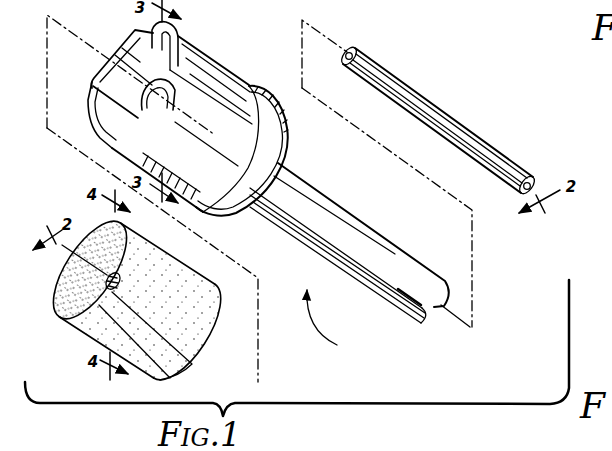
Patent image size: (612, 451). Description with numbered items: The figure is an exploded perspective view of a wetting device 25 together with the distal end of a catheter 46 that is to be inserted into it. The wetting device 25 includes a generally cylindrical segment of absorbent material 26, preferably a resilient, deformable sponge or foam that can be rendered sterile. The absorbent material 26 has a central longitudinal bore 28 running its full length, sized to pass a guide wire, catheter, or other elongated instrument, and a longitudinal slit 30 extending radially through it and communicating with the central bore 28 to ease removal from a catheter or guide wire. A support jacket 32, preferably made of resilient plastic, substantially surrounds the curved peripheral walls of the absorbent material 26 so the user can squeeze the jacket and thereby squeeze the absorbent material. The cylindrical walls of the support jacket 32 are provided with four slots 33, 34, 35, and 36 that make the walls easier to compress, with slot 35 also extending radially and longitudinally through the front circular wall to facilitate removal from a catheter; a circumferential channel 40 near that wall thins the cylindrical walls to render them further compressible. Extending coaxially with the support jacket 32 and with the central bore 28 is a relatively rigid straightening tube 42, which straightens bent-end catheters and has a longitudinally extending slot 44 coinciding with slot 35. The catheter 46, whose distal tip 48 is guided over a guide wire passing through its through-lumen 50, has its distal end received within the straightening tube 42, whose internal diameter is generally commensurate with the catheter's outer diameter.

The wetting device 25 is at (335, 325).
The absorbent material 26 is at (213, 317).
The central longitudinal bore 28 is at (105, 238).
The longitudinal slit 30 is at (83, 331).
The support jacket 32 is at (207, 55).
The slot 33 is at (146, 29).
The slot 34 is at (233, 75).
The slot 35 is at (125, 128).
The slot 36 is at (82, 88).
The circumferential channel 40 is at (252, 88).
The straightening tube 42 is at (358, 222).
The longitudinally extending slot 44 is at (433, 307).
The catheter 46 is at (463, 118).
The distal tip 48 is at (350, 47).
The through-lumen 50 is at (345, 55).